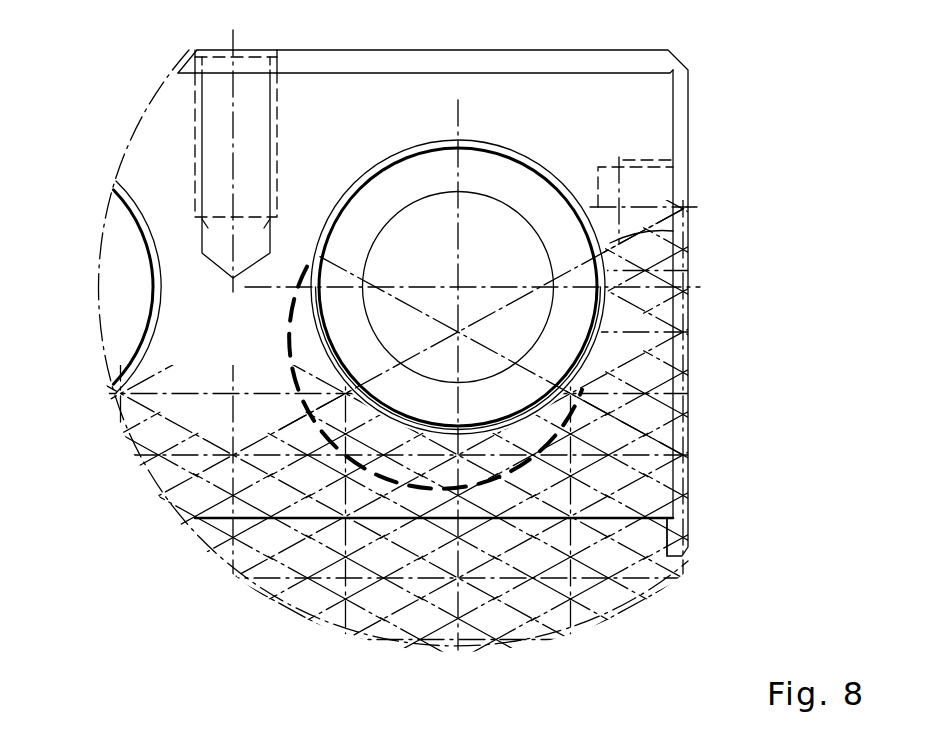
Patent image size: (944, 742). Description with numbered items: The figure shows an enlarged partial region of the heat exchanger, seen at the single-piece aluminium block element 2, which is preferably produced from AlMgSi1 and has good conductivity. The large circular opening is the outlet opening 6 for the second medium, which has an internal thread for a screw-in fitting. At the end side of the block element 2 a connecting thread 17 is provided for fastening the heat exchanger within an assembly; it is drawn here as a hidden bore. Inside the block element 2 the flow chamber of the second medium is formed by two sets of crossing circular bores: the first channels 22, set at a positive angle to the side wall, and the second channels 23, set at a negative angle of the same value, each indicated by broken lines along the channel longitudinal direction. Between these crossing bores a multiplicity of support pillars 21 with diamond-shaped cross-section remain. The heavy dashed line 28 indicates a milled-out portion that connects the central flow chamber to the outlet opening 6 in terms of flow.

The block element 2 is at (688, 93).
The outlet opening 6 is at (537, 186).
The connecting thread 17 is at (187, 98).
The support pillars 21 is at (380, 585).
The first channels 22 is at (657, 350).
The second channels 23 is at (688, 342).
The line 28 is at (287, 333).